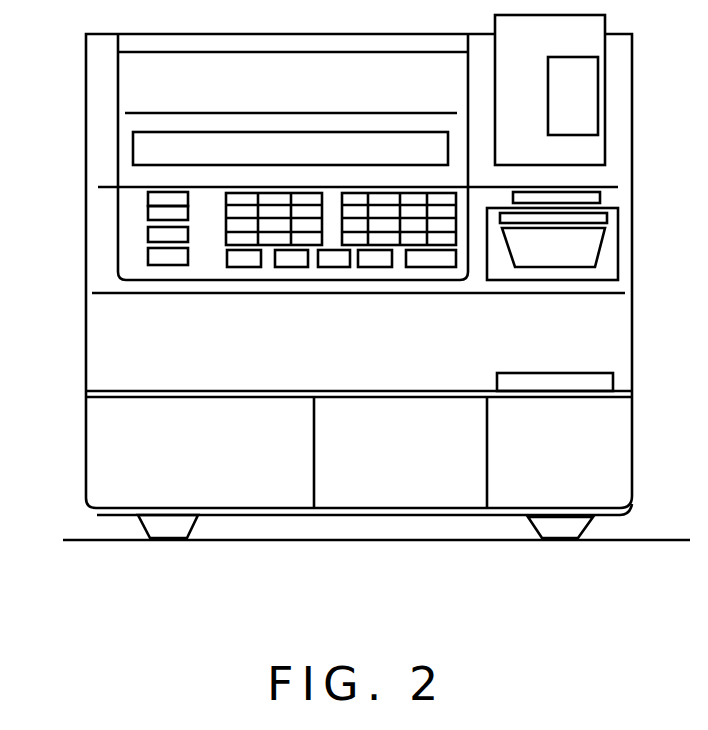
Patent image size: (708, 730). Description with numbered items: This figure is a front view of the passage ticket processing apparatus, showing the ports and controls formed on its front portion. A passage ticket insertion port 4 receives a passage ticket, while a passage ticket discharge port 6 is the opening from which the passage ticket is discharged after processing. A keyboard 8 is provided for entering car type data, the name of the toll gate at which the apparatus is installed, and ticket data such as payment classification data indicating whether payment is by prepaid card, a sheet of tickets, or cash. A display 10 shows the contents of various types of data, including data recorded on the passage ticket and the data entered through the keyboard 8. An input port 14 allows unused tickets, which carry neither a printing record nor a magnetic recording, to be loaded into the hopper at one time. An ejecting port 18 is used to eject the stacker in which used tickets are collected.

The passage ticket insertion port 4 is at (582, 252).
The passage ticket discharge port 6 is at (592, 383).
The keyboard 8 is at (128, 236).
The display 10 is at (367, 147).
The input port 14 is at (562, 116).
The ejecting port 18 is at (617, 453).